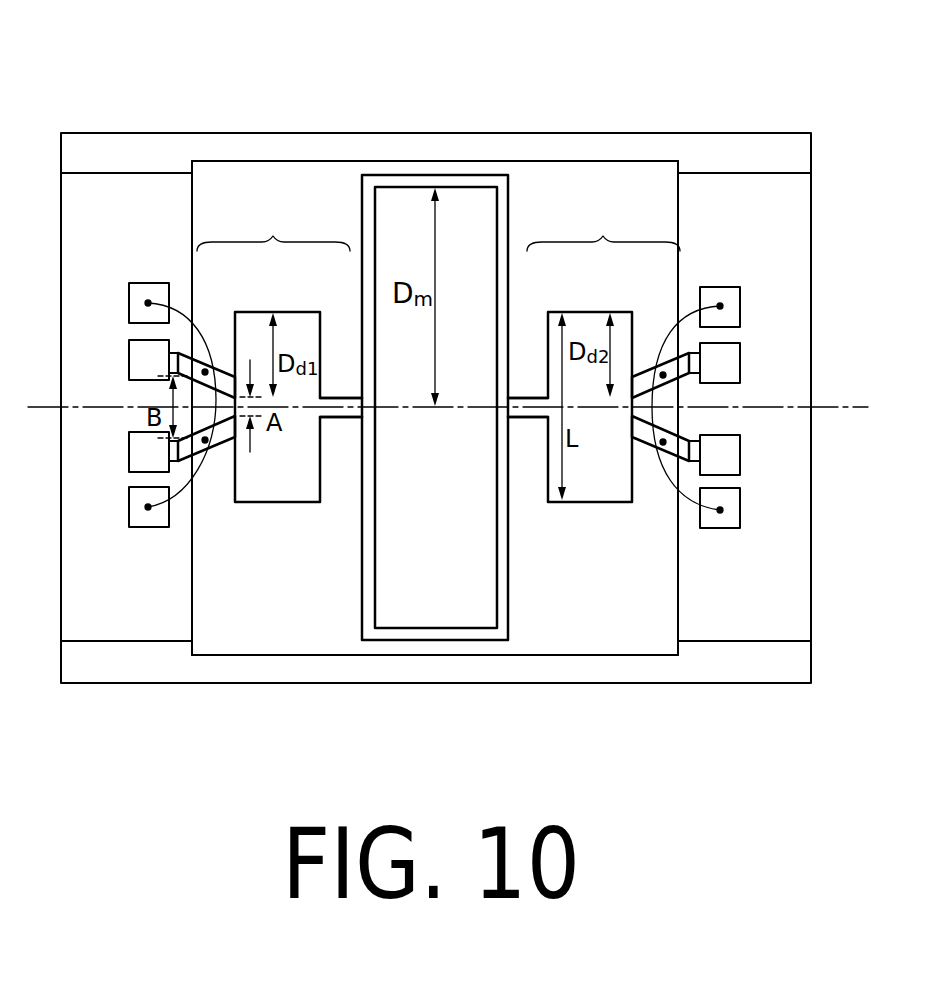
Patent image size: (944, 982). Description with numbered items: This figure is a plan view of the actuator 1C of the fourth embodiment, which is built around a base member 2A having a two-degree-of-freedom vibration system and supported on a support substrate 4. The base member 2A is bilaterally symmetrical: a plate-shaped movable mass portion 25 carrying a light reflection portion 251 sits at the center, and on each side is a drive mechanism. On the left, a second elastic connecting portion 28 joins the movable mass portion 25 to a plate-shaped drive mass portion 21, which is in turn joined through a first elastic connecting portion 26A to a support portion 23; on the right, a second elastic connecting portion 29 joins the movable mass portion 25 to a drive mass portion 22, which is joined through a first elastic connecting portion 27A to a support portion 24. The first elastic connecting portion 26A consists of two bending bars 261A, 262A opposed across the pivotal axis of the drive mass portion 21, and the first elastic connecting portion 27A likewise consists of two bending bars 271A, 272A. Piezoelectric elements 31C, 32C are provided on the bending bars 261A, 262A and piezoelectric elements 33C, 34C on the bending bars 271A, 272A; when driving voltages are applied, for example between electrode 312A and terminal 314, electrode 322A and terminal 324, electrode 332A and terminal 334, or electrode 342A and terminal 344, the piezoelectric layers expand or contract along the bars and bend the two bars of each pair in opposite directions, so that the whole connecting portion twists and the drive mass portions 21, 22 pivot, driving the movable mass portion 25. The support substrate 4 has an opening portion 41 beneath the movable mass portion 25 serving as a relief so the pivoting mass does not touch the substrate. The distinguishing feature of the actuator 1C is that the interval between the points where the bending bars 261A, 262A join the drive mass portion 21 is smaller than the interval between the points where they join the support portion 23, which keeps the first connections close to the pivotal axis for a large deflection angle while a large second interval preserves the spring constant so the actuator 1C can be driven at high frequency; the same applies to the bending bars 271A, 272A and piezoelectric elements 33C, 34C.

The actuator 1C is at (718, 88).
The base member 2A is at (822, 268).
The support substrate 4 is at (224, 665).
The opening portion 41 is at (278, 635).
The drive mass portion 21 is at (287, 477).
The drive mass portion 22 is at (583, 483).
The support portion 23 is at (130, 615).
The support portion 24 is at (748, 620).
The movable mass portion 25 is at (390, 635).
The light reflection portion 251 is at (435, 612).
The first elastic connecting portion 26A is at (273, 231).
The bending bar 261A is at (222, 385).
The bending bar 262A is at (206, 372).
The first elastic connecting portion 27A is at (603, 231).
The bending bar 271A is at (655, 360).
The bending bar 272A is at (663, 372).
The second elastic connecting portion 28 is at (337, 396).
The second elastic connecting portion 29 is at (523, 396).
The piezoelectric element 31C is at (220, 455).
The piezoelectric element 32C is at (187, 455).
The piezoelectric element 33C is at (648, 462).
The piezoelectric element 34C is at (675, 466).
The electrode 312A is at (138, 445).
The terminal 314 is at (137, 513).
The electrode 322A is at (138, 353).
The terminal 324 is at (129, 293).
The electrode 332A is at (775, 437).
The terminal 334 is at (733, 518).
The electrode 342A is at (735, 367).
The terminal 344 is at (735, 297).